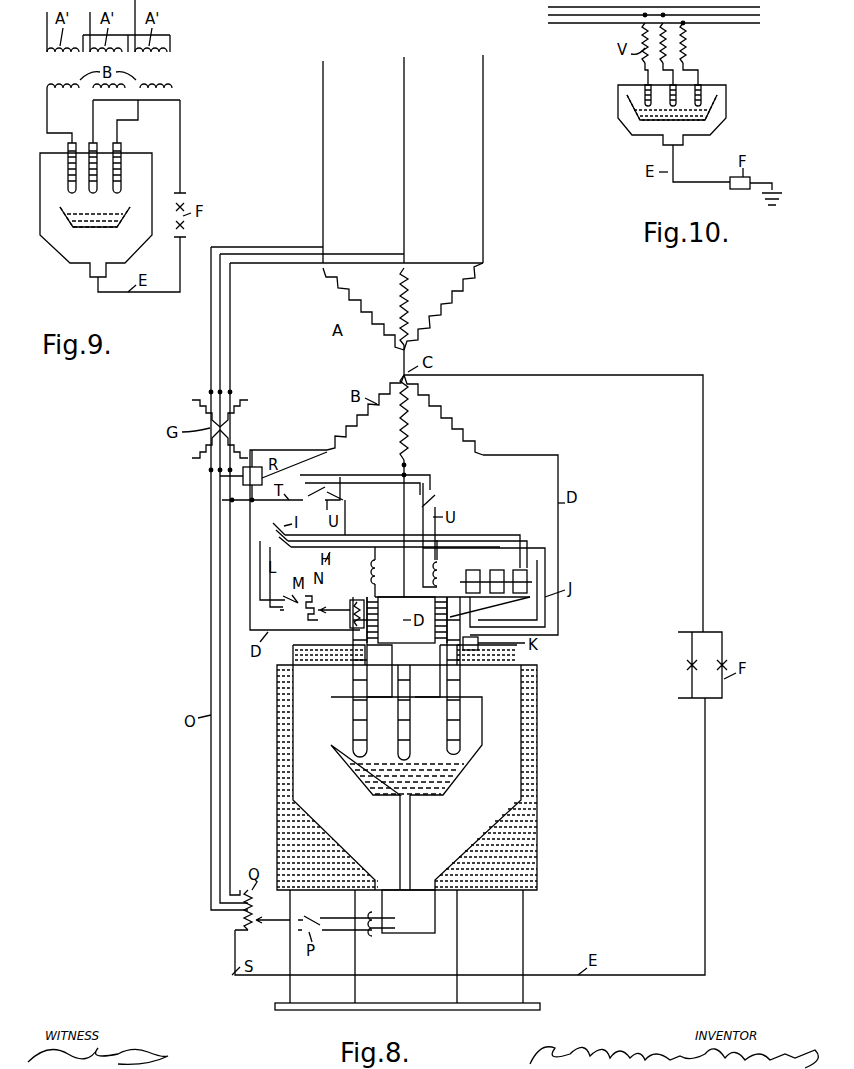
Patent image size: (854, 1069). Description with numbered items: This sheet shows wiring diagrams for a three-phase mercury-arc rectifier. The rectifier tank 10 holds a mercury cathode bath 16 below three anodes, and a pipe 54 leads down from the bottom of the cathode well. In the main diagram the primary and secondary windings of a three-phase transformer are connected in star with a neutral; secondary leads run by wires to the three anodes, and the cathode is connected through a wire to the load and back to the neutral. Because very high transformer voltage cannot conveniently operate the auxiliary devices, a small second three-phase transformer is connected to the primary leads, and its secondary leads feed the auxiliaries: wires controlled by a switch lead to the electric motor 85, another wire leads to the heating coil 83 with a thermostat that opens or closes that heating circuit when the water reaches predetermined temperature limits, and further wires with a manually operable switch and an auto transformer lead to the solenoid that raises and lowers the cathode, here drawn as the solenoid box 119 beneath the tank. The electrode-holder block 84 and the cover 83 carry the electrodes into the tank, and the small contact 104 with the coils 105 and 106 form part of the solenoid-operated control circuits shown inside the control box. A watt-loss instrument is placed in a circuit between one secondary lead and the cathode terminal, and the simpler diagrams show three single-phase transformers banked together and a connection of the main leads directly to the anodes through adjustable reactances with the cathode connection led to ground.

In FIG. 9, the electric furnace 10 is at (40, 197).
In FIG. 10, the electric furnace 10 is at (618, 100).
In FIG. 8, the electric furnace 10 is at (515, 791).
In FIG. 9, the crucible / molten bath 16 is at (76, 220).
In FIG. 10, the crucible / molten bath 16 is at (633, 118).
In FIG. 8, the crucible / molten bath 16 is at (363, 778).
In FIG. 8, the tap pipe 54 is at (411, 836).
In FIG. 8, the heating coil 83 is at (327, 665).
In FIG. 8, the electrode holder block 84 is at (407, 620).
In FIG. 8, the electric motor 85 is at (527, 578).
In FIG. 8, the contact 104 is at (330, 600).
In FIG. 8, the coil 105 is at (382, 572).
In FIG. 8, the coil 106 is at (443, 563).
In FIG. 8, the solenoid box 119 is at (378, 913).